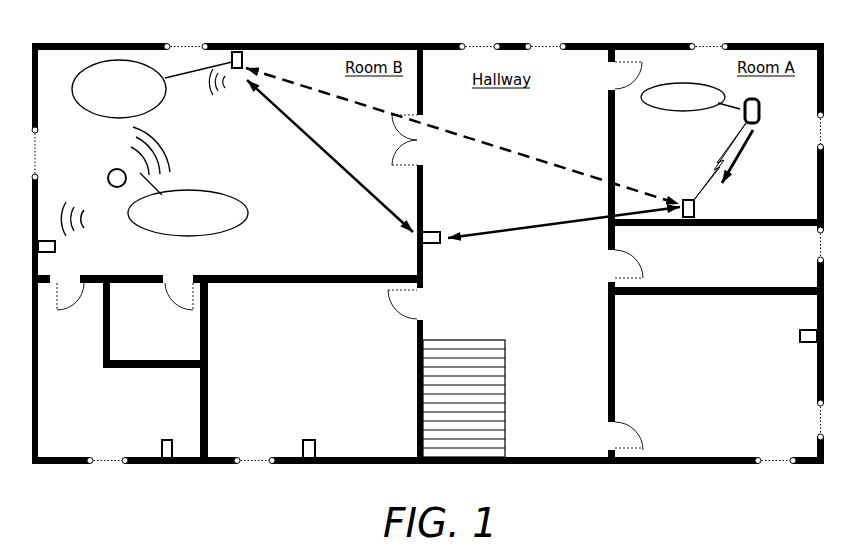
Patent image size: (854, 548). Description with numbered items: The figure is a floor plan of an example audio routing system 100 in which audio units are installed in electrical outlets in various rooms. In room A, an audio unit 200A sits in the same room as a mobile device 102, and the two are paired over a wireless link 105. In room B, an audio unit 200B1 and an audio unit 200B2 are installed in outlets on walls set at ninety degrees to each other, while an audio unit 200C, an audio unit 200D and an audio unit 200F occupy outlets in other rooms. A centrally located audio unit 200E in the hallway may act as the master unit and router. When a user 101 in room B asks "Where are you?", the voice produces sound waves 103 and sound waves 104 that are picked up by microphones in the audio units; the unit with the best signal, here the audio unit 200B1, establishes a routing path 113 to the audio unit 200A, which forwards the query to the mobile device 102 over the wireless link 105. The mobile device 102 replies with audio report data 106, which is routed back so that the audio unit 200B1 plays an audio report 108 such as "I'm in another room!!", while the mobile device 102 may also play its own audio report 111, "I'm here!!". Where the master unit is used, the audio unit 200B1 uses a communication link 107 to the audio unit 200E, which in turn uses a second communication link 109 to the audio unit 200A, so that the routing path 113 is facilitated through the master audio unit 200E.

The audio routing system 100 is at (799, 33).
The user 101 is at (108, 183).
The mobile device 102 is at (760, 120).
The sound waves 103 is at (128, 152).
The sound waves 104 is at (93, 220).
The wireless link 105 is at (708, 176).
The audio report data 106 is at (740, 158).
The communication link 107 is at (376, 200).
The audio report 108 is at (153, 90).
The communication link 109 is at (590, 218).
The audio report 111 is at (683, 106).
The routing path 113 is at (510, 148).
The audio unit 200A is at (698, 210).
The audio unit 200B1 is at (244, 61).
The audio unit 200B2 is at (55, 247).
The audio unit 200C is at (162, 446).
The audio unit 200D is at (316, 446).
The audio unit 200E is at (443, 231).
The audio unit 200F is at (797, 341).